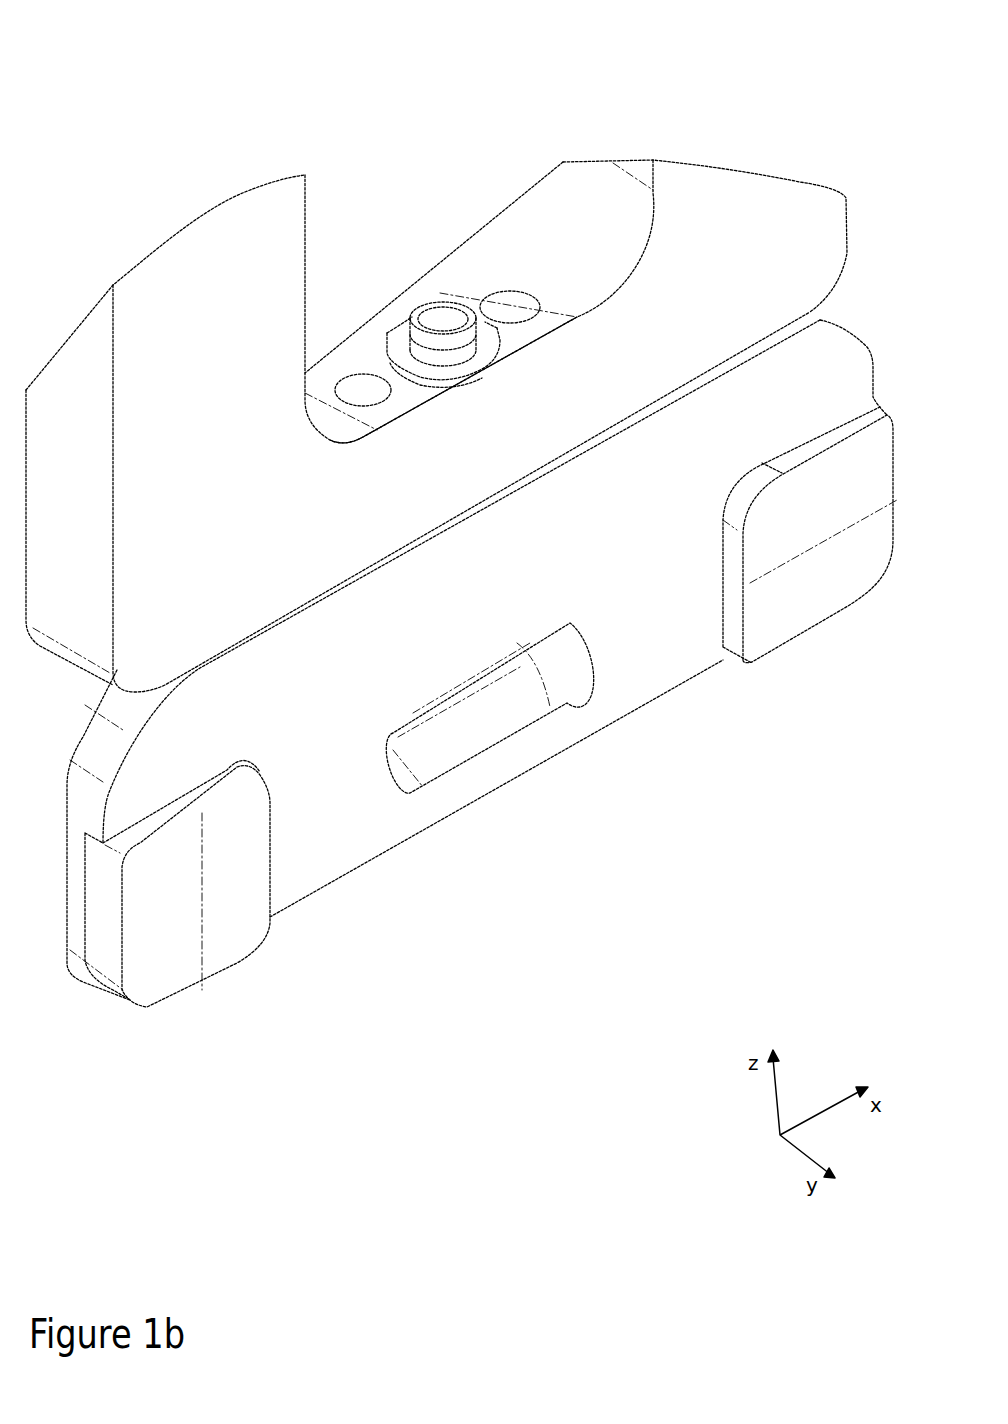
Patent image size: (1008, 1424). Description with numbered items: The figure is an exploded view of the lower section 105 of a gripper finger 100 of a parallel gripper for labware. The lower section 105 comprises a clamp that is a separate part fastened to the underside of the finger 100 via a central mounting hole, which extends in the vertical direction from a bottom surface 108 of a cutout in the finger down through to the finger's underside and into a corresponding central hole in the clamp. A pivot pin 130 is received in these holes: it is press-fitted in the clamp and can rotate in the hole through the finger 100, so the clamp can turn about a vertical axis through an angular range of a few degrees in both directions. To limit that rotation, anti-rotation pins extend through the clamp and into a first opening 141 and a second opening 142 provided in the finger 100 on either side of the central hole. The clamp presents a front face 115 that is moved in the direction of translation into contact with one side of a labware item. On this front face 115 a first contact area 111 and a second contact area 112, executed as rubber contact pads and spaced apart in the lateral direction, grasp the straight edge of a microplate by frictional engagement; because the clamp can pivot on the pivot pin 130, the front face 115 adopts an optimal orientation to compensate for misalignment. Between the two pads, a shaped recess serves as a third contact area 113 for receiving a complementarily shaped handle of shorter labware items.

The finger 100 is at (461, 552).
The lower section 105 is at (80, 267).
The bottom surface 108 is at (373, 358).
The first contact area 111 is at (155, 943).
The second contact area 112 is at (830, 573).
The third contact area 113 is at (497, 680).
The front face 115 is at (472, 712).
The pivot pin 130 is at (450, 323).
The first opening 141 is at (358, 393).
The second opening 142 is at (515, 313).